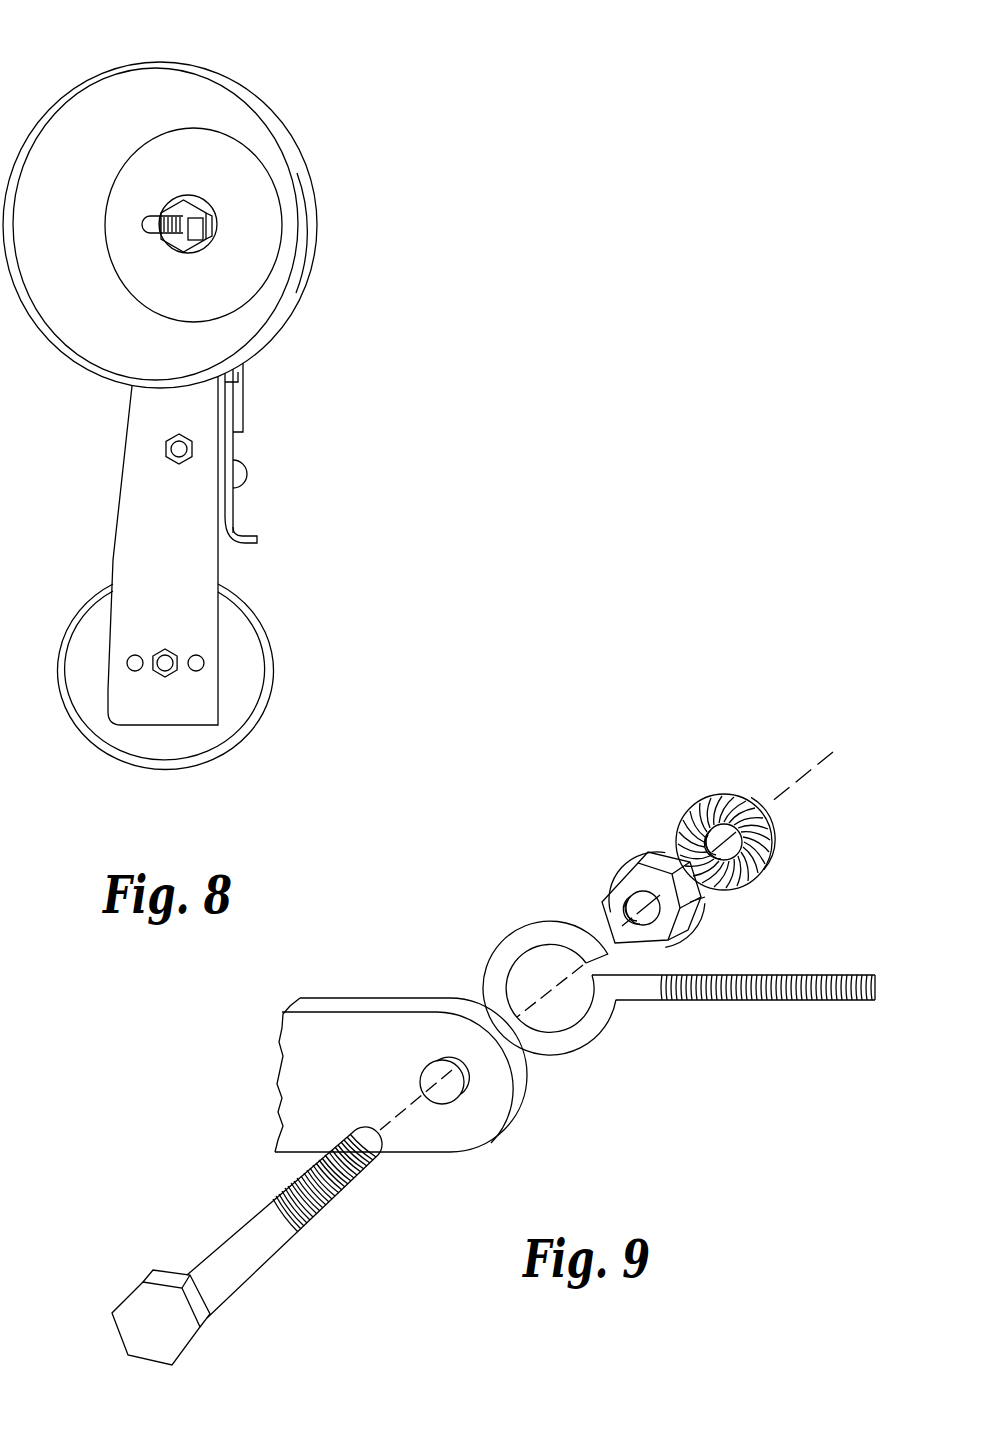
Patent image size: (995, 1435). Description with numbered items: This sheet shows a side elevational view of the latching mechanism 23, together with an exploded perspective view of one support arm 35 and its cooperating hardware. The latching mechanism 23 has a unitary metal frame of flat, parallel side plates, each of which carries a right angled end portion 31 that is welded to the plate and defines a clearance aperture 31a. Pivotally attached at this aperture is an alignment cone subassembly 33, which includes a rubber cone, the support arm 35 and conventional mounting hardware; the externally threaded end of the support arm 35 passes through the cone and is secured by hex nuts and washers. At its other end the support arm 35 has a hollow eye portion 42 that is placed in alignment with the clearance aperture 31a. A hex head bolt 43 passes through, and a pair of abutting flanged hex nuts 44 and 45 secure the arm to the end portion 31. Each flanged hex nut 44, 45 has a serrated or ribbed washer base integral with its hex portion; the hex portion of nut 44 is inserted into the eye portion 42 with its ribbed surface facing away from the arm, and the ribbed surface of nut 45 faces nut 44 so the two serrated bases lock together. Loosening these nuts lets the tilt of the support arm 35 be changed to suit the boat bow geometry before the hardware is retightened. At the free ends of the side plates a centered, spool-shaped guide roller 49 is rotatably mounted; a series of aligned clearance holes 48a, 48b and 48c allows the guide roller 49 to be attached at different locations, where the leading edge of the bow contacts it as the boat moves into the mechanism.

In FIG. 8, the latching mechanism 23 is at (300, 444).
In FIG. 8, the alignment cone subassembly 33 is at (272, 84).
In FIG. 8, the support arm 35 is at (160, 213).
In FIG. 9, the support arm 35 is at (575, 1035).
In FIG. 8, the guide roller 49 is at (237, 603).
In FIG. 8, the clearance hole 48a is at (128, 668).
In FIG. 8, the clearance hole 48b is at (204, 668).
In FIG. 8, the clearance hole 48c is at (170, 653).
In FIG. 9, the end portion 31 is at (497, 1090).
In FIG. 9, the clearance aperture 31a is at (443, 1106).
In FIG. 9, the hollow eye portion 42 is at (521, 964).
In FIG. 9, the hex head bolt 43 is at (173, 1317).
In FIG. 9, the flanged hex nut 44 is at (690, 903).
In FIG. 9, the flanged hex nut 45 is at (777, 843).